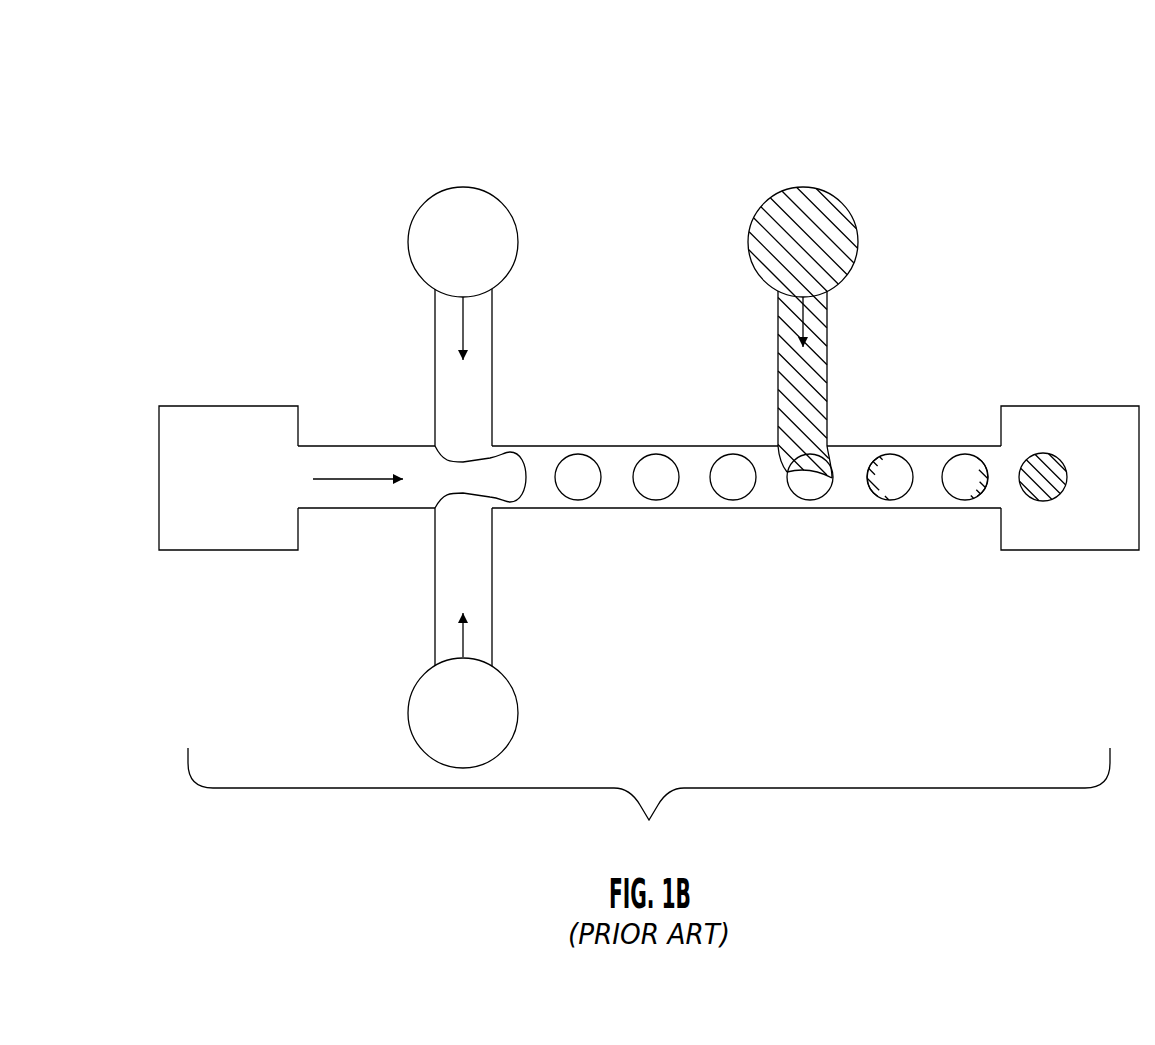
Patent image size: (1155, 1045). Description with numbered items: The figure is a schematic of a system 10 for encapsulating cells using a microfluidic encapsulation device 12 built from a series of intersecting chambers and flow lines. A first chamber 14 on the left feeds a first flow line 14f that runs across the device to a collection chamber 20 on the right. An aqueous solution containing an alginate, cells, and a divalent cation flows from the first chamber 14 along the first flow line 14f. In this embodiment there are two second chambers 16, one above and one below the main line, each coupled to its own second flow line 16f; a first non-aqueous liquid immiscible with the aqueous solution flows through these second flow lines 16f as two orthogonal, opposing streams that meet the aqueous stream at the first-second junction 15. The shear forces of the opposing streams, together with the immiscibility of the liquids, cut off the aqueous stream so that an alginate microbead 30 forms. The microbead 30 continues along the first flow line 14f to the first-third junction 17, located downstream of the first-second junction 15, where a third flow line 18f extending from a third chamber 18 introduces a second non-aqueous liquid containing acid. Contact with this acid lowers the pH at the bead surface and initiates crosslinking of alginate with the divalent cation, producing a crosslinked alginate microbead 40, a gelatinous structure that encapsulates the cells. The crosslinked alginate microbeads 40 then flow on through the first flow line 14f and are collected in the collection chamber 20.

The system 10 is at (903, 88).
The microfluidic encapsulation device 12 is at (649, 802).
The first chamber 14 is at (234, 428).
The first flow line 14f is at (752, 508).
The first-second junction 15 is at (508, 422).
The second chamber 16 is at (468, 223).
The second flow line 16f is at (493, 350).
The first-third junction 17 is at (835, 438).
The third chamber 18 is at (817, 208).
The third flow line 18f is at (837, 315).
The collection chamber 20 is at (1083, 418).
The alginate microbead 30 is at (664, 480).
The crosslinked alginate microbead 40 is at (1045, 485).